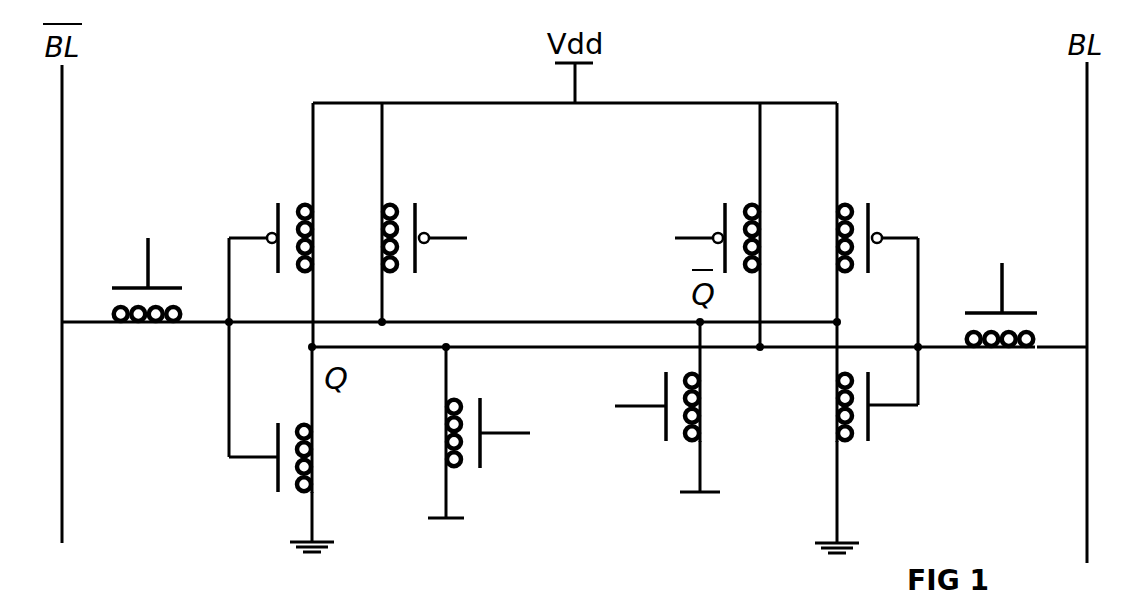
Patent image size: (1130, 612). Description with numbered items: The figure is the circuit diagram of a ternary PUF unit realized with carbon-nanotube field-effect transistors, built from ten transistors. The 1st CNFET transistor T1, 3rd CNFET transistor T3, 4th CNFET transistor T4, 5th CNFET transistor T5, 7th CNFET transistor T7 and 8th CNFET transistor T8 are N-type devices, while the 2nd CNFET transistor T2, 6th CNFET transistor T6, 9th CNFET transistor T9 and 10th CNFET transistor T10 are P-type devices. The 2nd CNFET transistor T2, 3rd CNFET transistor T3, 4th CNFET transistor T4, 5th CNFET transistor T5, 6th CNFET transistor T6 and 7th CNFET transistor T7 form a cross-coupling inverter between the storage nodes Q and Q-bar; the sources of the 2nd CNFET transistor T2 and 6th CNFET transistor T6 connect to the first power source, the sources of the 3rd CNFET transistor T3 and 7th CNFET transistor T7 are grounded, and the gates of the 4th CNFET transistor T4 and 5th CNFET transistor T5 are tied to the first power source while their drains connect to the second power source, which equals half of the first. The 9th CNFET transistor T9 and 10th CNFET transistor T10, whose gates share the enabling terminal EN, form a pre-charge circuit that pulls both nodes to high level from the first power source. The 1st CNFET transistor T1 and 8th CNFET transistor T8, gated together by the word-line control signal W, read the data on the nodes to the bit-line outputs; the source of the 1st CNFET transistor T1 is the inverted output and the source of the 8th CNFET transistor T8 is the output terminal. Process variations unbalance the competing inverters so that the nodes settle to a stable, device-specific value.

The 1st CNFET transistor T1 is at (147, 284).
The 2nd CNFET transistor T2 is at (289, 280).
The 3rd CNFET transistor T3 is at (289, 449).
The 4th CNFET transistor T4 is at (502, 453).
The 5th CNFET transistor T5 is at (645, 428).
The 6th CNFET transistor T6 is at (858, 254).
The 7th CNFET transistor T7 is at (858, 462).
The 8th CNFET transistor T8 is at (1001, 307).
The 9th CNFET transistor T9 is at (429, 212).
The 10th CNFET transistor T10 is at (720, 225).